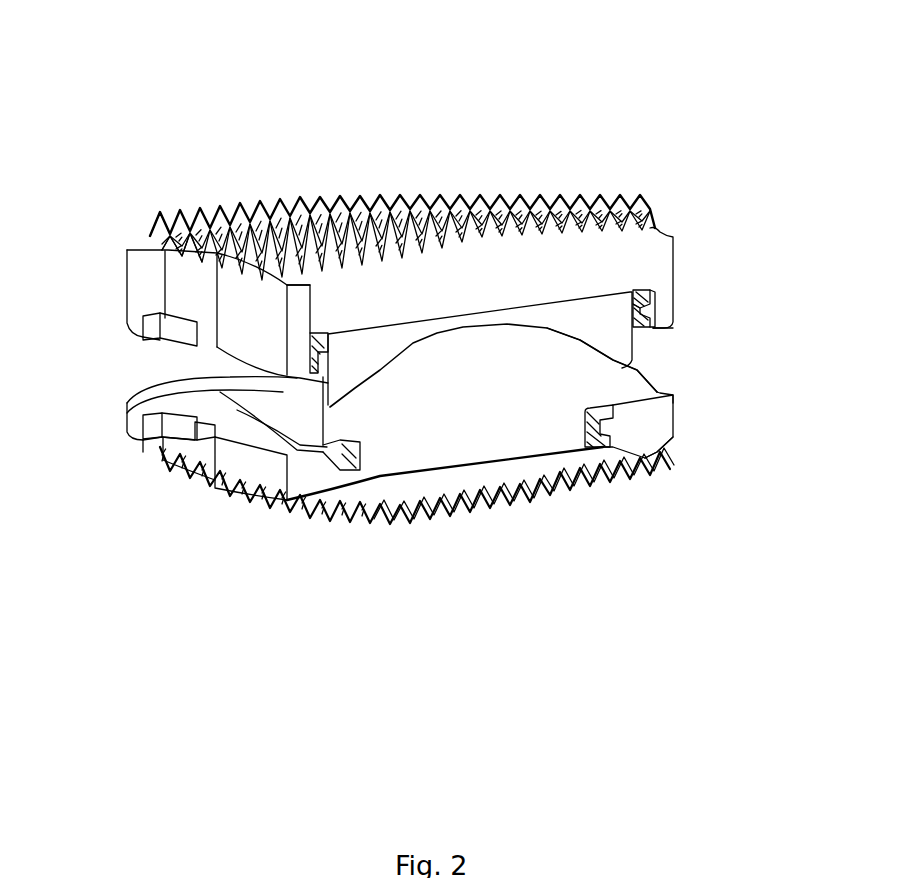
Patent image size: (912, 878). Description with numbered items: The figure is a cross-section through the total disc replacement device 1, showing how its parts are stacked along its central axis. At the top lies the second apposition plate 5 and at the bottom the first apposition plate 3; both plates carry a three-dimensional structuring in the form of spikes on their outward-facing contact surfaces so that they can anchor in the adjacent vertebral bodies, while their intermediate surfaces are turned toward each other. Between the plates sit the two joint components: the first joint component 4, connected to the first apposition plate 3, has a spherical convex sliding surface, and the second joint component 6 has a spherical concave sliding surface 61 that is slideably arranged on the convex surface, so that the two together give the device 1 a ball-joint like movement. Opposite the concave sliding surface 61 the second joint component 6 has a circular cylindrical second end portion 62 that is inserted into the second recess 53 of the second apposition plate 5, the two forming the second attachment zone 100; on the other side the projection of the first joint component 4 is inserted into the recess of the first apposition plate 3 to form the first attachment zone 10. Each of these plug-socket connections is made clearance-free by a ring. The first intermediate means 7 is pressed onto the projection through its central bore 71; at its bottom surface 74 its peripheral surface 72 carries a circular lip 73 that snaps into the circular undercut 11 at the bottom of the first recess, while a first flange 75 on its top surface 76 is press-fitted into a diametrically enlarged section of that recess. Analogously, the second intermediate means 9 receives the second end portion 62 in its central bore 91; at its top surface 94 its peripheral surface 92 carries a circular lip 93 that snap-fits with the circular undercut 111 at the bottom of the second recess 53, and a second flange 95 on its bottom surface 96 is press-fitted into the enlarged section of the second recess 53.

The total disc replacement device 1 is at (600, 187).
The first apposition plate 3 is at (556, 466).
The first joint component 4 is at (607, 443).
The second apposition plate 5 is at (638, 247).
The second joint component 6 is at (613, 342).
The first intermediate means 7 is at (622, 470).
The second intermediate means 9 is at (676, 302).
The first attachment zone 10 is at (340, 457).
The circular undercut 11 is at (340, 482).
The second recess 53 is at (160, 237).
The spherical concave sliding surface 61 is at (620, 355).
The second end portion 62 is at (340, 333).
The central bore 71 is at (350, 470).
The peripheral surface 72 is at (610, 425).
The circular lip 73 is at (645, 455).
The bottom surface 74 is at (372, 468).
The first flange 75 is at (617, 417).
The top surface 76 is at (660, 397).
The central bore 91 is at (312, 348).
The peripheral surface 92 is at (648, 312).
The circular lip 93 is at (642, 298).
The top surface 94 is at (325, 333).
The second flange 95 is at (330, 378).
The bottom surface 96 is at (330, 402).
The second attachment zone 100 is at (330, 362).
The circular undercut 111 is at (213, 222).